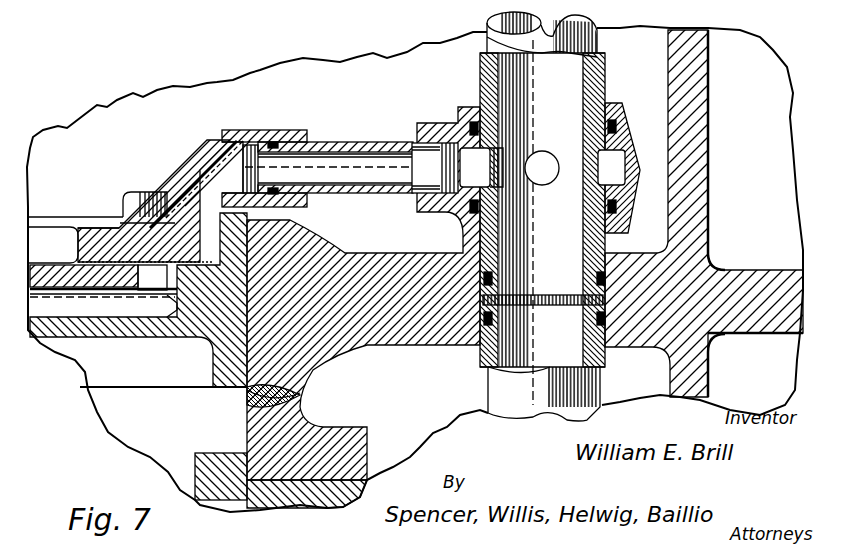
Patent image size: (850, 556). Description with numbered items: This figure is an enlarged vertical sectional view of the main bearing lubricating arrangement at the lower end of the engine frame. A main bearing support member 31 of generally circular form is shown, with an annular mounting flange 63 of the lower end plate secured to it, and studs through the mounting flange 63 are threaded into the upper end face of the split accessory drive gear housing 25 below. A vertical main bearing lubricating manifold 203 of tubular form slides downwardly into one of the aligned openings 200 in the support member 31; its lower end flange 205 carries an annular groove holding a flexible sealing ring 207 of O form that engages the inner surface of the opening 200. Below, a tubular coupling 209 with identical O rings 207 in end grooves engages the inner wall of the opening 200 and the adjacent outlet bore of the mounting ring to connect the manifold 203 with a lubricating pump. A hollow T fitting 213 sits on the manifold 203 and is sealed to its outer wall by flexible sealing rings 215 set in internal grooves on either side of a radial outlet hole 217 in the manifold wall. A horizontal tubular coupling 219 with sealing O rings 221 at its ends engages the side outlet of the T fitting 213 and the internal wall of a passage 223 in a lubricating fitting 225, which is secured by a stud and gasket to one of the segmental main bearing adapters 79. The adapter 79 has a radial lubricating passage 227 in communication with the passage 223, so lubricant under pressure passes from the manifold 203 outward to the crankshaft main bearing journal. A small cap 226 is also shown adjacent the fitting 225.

The engine accessory drive gear housing 25 is at (232, 480).
The main bearing support member 31 is at (413, 327).
The annular mounting flange 63 is at (325, 460).
The main bearing adapter 79 is at (72, 322).
The opening 200 is at (473, 340).
The main bearing lubricating manifold 203 is at (500, 47).
The lower end flange 205 is at (480, 237).
The flexible sealing ring 207 is at (587, 304).
The tubular coupling 209 is at (520, 400).
The hollow T fitting 213 is at (618, 105).
The flexible sealing ring 215 is at (468, 125).
The radial outlet hole 217 is at (540, 152).
The tubular coupling 219 is at (343, 143).
The flexible sealing O ring 221 is at (273, 143).
The passage 223 is at (240, 135).
The lubricating fitting 225 is at (197, 178).
The cap 226 is at (125, 208).
The radial lubricating passage 227 is at (67, 293).